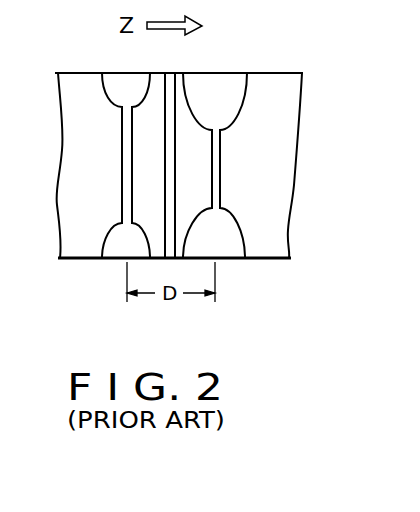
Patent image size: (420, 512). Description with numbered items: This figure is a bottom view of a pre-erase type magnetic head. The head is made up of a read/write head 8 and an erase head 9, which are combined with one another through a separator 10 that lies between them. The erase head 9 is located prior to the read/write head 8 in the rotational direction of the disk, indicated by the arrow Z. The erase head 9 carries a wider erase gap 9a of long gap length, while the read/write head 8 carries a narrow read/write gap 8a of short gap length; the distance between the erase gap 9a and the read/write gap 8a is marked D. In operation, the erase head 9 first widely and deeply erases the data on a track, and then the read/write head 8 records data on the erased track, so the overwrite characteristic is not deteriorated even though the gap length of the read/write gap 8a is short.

The read/write head 8 is at (280, 86).
The erase head 9 is at (77, 85).
The separator 10 is at (167, 84).
The read/write gap 8a is at (220, 172).
The erase gap 9a is at (122, 173).